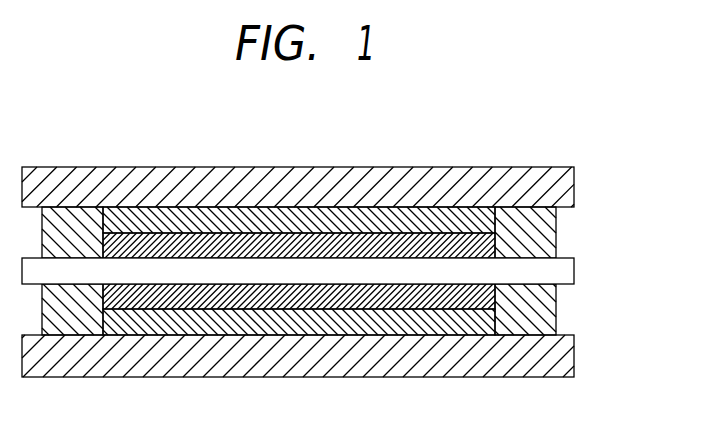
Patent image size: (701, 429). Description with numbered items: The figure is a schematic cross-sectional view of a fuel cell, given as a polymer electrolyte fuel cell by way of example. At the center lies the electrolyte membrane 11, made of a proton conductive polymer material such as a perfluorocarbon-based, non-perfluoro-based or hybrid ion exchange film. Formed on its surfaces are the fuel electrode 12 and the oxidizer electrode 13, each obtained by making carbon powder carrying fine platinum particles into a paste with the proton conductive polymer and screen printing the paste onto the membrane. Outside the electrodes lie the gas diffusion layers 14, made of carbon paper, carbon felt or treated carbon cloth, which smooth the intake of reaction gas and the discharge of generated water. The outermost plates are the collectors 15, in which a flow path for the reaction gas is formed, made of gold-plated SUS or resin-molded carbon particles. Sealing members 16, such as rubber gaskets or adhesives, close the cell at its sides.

The electrolyte membrane 11 is at (563, 272).
The fuel electrode 12 is at (487, 302).
The oxidizer electrode 13 is at (435, 237).
The gas diffusion layer 14 is at (189, 221).
The collector 15 is at (303, 183).
The sealing member 16 is at (78, 218).